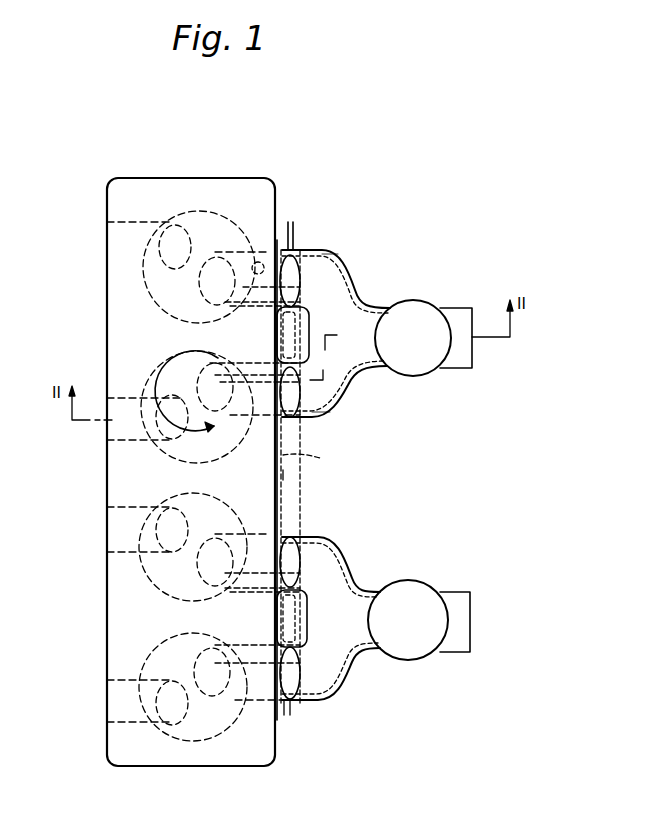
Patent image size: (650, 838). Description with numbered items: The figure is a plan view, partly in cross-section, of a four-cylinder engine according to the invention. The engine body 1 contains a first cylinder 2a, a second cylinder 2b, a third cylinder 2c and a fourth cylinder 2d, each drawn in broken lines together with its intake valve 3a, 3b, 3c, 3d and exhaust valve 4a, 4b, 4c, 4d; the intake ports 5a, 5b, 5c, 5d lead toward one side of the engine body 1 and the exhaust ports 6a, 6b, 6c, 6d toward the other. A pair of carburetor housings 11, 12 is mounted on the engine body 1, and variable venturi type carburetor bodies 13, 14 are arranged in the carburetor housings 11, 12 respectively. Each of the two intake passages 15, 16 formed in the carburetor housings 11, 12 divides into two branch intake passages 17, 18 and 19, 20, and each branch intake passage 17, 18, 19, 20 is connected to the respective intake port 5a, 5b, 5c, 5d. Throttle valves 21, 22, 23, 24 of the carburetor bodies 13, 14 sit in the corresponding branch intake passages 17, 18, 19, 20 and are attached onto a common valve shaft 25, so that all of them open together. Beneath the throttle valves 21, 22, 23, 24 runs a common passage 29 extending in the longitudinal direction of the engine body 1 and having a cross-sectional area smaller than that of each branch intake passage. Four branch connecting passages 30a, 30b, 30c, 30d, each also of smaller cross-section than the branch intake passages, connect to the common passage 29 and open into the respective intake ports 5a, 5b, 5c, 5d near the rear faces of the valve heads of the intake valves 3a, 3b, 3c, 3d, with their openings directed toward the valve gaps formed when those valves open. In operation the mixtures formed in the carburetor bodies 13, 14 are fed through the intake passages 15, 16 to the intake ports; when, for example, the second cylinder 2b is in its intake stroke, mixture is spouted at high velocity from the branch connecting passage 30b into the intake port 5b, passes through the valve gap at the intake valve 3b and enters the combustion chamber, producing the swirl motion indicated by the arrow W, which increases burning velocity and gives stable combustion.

The engine body 1 is at (286, 175).
The No. 1 cylinder 2a is at (150, 282).
The No. 2 cylinder 2b is at (180, 457).
The No. 3 cylinder 2c is at (165, 585).
The No. 4 cylinder 2d is at (172, 730).
The intake valve 3a is at (222, 262).
The intake valve 3b is at (215, 362).
The intake valve 3c is at (215, 540).
The intake valve 3d is at (214, 650).
The exhaust valve 4a is at (172, 232).
The exhaust valve 4b is at (170, 395).
The exhaust valve 4c is at (172, 510).
The exhaust valve 4d is at (172, 682).
The intake port 5a is at (256, 258).
The intake port 5b is at (254, 415).
The intake port 5c is at (253, 534).
The intake port 5d is at (252, 700).
The exhaust port 6a is at (134, 222).
The exhaust port 6b is at (120, 440).
The exhaust port 6c is at (118, 552).
The exhaust port 6d is at (122, 722).
The carburetor housing 11 is at (356, 268).
The carburetor housing 12 is at (356, 563).
The variable venturi type carburetor body 13 is at (430, 300).
The variable venturi type carburetor body 14 is at (422, 582).
The intake passage 15 is at (351, 329).
The intake passage 16 is at (354, 628).
The branch intake passage 17 is at (296, 272).
The branch intake passage 18 is at (298, 410).
The branch intake passage 19 is at (300, 540).
The branch intake passage 20 is at (294, 702).
The throttle valve 21 is at (320, 256).
The throttle valve 22 is at (325, 414).
The throttle valve 23 is at (300, 570).
The throttle valve 24 is at (298, 662).
The common valve shaft 25 is at (286, 476).
The common passage 29 is at (322, 458).
The branch connecting passage 30a is at (258, 288).
The branch connecting passage 30b is at (254, 362).
The branch connecting passage 30c is at (255, 580).
The branch connecting passage 30d is at (255, 655).
The swirl motion arrow W is at (212, 428).